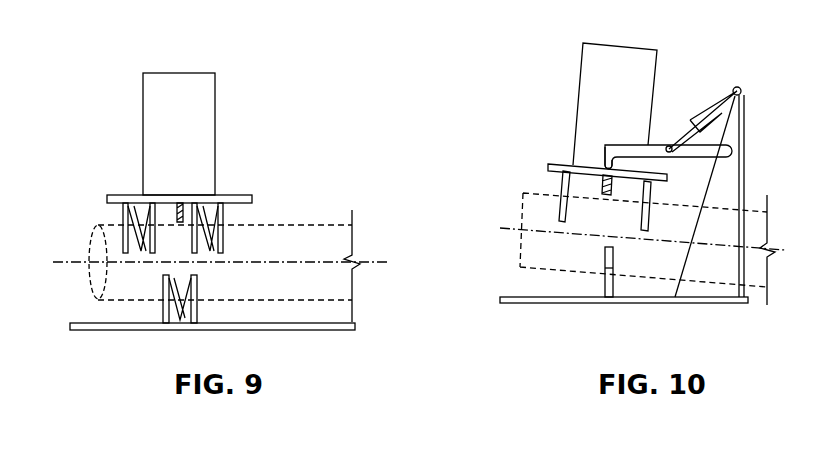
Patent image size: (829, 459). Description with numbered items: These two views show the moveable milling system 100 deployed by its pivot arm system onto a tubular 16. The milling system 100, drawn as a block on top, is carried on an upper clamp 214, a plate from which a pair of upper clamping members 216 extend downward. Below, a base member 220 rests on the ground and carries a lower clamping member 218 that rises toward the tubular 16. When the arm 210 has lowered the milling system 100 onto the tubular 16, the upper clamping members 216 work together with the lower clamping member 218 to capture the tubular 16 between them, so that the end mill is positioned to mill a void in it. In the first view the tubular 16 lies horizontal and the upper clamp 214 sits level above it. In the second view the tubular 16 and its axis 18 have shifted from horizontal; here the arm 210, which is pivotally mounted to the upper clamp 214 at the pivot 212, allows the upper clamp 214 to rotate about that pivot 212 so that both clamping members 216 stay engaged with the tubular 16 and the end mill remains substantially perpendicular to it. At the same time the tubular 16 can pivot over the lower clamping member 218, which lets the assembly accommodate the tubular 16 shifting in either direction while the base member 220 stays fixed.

In FIG. 9, the milling system 100 is at (243, 63).
In FIG. 10, the milling system 100 is at (715, 42).
In FIG. 9, the tubular 16 is at (316, 241).
In FIG. 10, the tubular 16 is at (537, 207).
In FIG. 10, the axis 18 is at (512, 228).
In FIG. 10, the arm 210 is at (662, 146).
In FIG. 10, the pivot 212 is at (608, 165).
In FIG. 9, the upper clamp 214 is at (231, 196).
In FIG. 10, the upper clamp 214 is at (552, 165).
In FIG. 9, the upper clamping members 216 is at (123, 218).
In FIG. 10, the upper clamping members 216 is at (642, 206).
In FIG. 9, the lower clamping member 218 is at (199, 293).
In FIG. 10, the lower clamping member 218 is at (614, 290).
In FIG. 9, the base member 220 is at (90, 322).
In FIG. 10, the base member 220 is at (523, 297).